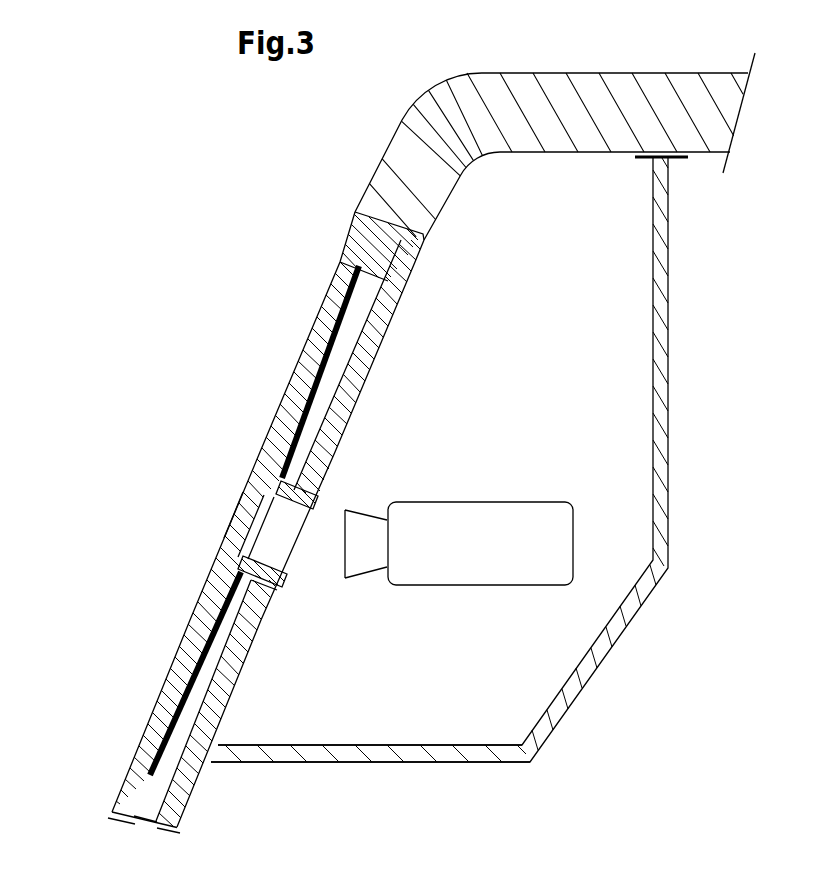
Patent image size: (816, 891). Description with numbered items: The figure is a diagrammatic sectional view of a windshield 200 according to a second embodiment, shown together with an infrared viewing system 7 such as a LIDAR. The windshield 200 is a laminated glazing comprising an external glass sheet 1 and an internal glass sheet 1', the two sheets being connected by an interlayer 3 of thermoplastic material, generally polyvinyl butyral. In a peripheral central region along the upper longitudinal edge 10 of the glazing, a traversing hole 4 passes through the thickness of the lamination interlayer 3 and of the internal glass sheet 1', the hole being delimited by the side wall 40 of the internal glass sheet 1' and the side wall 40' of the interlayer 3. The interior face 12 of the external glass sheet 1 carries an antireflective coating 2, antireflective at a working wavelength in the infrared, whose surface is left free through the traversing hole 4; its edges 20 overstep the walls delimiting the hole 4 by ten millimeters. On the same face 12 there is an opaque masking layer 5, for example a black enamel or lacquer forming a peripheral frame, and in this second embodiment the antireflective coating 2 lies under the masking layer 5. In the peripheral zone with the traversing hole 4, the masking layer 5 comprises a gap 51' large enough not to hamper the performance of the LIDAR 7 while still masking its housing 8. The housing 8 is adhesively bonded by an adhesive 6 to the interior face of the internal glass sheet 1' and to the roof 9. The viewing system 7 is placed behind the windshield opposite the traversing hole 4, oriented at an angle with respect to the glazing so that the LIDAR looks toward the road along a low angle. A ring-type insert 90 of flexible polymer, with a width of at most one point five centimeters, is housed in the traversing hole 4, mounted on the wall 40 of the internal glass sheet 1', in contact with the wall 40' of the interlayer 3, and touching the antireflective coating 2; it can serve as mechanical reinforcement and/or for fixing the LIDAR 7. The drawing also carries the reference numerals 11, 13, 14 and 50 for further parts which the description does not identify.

The external glass sheet 1 is at (223, 512).
The internal glass sheet 1' is at (232, 703).
The antireflective coating 2 is at (243, 538).
The interlayer made of thermoplastic material 3 is at (168, 680).
The traversing hole 4 is at (275, 539).
The opaque masking layer 5 is at (326, 340).
The adhesive 6 is at (208, 737).
The infrared viewing system 7 is at (496, 502).
The housing 8 is at (662, 305).
The roof 9 is at (580, 73).
The upper longitudinal edge 10 is at (378, 184).
The lower mount 11 is at (121, 783).
The face F2 12 is at (201, 810).
The foot 13 is at (125, 806).
The lower rail 14 is at (192, 784).
The edges of the antireflective coating 20 is at (270, 472).
The wall of the second glass sheet 40 is at (329, 493).
The wall of the lamination interlayer 40' is at (285, 567).
The upper glass layer 50 is at (378, 258).
The gap 51' is at (206, 625).
The insert 90 is at (280, 584).
The windshield 200 is at (193, 382).